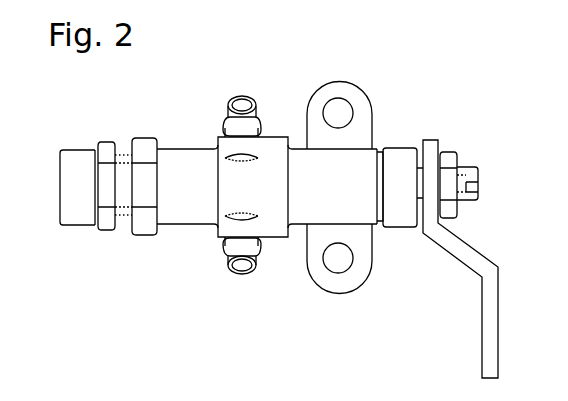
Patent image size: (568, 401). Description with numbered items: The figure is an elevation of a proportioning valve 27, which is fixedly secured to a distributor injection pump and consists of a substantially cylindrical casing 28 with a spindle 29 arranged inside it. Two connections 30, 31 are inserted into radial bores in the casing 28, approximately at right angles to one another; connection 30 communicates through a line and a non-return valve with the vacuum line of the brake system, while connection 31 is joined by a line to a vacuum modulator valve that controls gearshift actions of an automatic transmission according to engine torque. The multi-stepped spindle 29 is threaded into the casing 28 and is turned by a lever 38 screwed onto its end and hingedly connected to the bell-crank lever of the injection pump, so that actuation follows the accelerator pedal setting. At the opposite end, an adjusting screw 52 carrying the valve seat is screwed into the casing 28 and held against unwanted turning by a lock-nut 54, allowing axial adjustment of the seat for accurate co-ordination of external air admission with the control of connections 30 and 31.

The proportioning valve 27 is at (184, 143).
The casing 28 is at (276, 150).
The spindle 29 is at (468, 168).
The connection 30 is at (230, 103).
The connection 31 is at (226, 245).
The lever 38 is at (478, 267).
The adjusting screw 52 is at (125, 175).
The lock-nut 54 is at (146, 143).